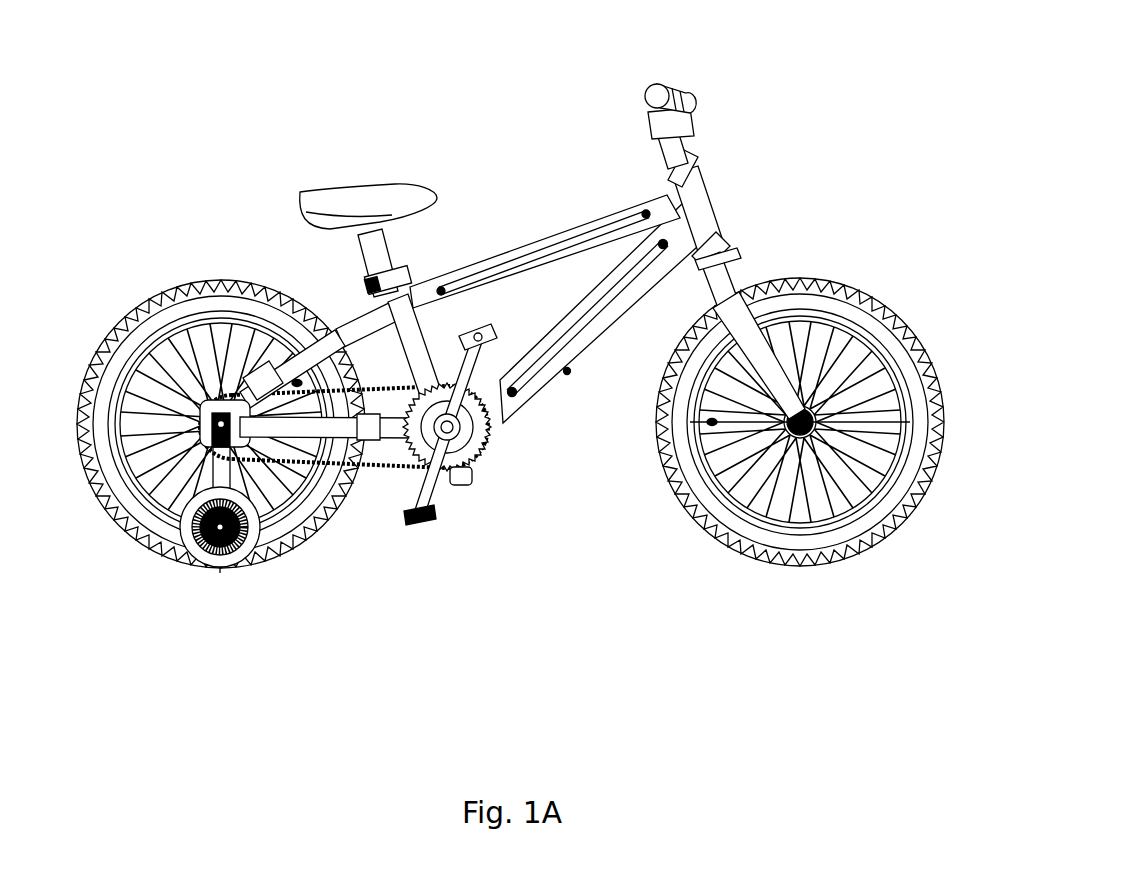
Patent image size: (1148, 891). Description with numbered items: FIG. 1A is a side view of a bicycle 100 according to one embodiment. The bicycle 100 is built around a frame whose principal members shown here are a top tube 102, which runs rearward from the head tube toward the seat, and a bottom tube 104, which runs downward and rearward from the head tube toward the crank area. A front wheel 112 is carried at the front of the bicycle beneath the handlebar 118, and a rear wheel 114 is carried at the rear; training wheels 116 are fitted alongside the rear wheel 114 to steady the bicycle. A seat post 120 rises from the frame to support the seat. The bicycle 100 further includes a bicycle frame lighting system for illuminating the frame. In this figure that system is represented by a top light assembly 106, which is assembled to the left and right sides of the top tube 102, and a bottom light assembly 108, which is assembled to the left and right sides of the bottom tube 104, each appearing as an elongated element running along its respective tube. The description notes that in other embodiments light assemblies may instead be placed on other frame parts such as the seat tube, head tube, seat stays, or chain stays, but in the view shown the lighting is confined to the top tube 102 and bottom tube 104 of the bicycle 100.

The bicycle 100 is at (88, 63).
The top tube 102 is at (502, 345).
The bottom tube 104 is at (567, 372).
The top light assembly 106 is at (587, 233).
The bottom light assembly 108 is at (603, 300).
The front wheel 112 is at (880, 297).
The rear wheel 114 is at (115, 332).
The training wheels 116 is at (203, 560).
The handlebar 118 is at (687, 100).
The seat post 120 is at (320, 193).